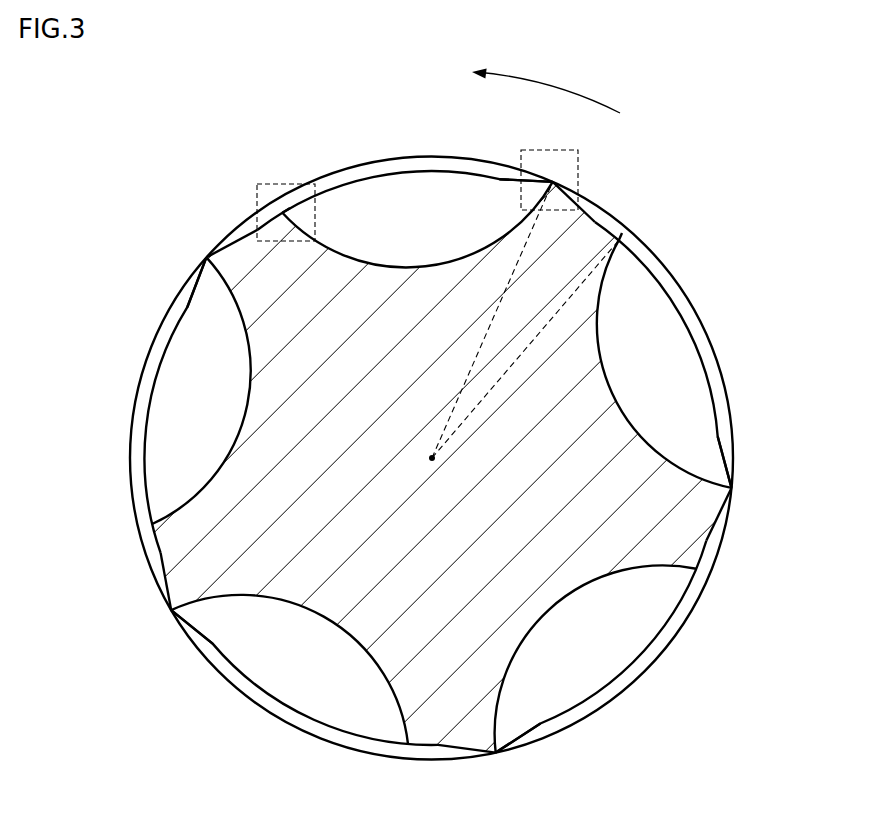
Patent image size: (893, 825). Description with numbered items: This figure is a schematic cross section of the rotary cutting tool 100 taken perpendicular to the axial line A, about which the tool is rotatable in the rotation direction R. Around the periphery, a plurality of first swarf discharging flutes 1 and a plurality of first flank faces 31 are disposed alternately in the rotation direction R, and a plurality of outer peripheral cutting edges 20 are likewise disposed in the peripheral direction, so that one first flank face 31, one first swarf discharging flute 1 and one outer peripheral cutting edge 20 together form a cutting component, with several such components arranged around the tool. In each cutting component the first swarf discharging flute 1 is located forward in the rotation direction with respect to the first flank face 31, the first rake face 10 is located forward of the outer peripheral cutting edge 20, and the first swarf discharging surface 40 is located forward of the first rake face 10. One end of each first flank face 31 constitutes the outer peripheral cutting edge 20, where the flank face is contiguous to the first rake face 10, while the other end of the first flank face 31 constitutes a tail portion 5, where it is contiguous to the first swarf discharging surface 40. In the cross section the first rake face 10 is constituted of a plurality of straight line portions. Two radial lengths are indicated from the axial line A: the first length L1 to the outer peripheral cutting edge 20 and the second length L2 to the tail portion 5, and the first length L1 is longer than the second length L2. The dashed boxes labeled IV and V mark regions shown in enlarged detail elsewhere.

The first swarf discharging flute 1 is at (446, 439).
The tail portion 5 is at (283, 213).
The first rake face 10 is at (520, 228).
The outer peripheral cutting edge 20 is at (552, 182).
The first flank face 31 is at (251, 230).
The first swarf discharging surface 40 is at (313, 247).
The rotary cutting tool 100 is at (718, 216).
The axial line A is at (436, 459).
The first length L1 is at (492, 320).
The second length L2 is at (525, 349).
The rotation direction R is at (538, 86).
The detail region IV is at (567, 150).
The detail region V is at (270, 184).